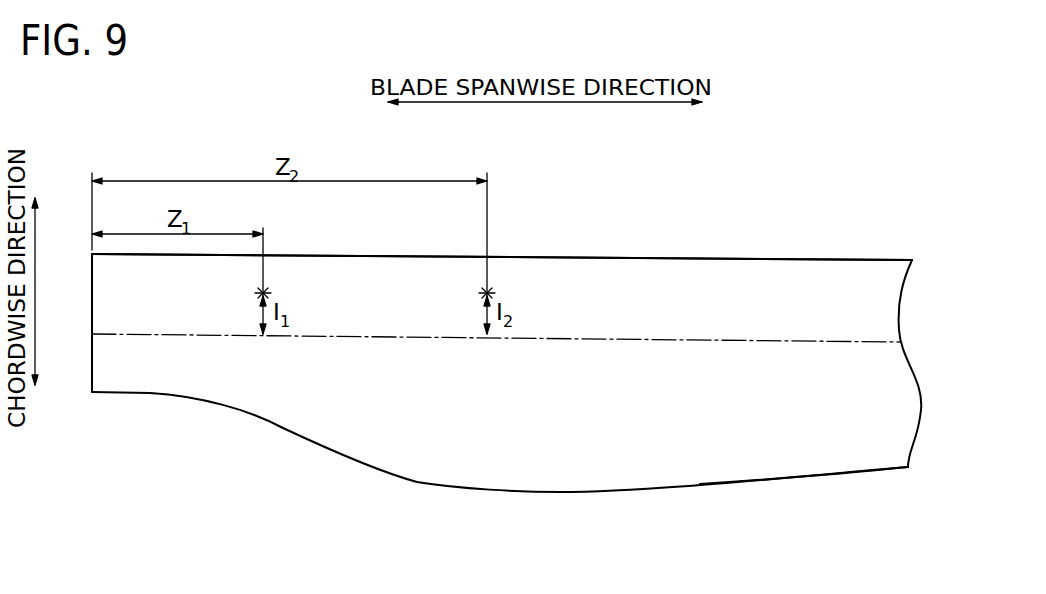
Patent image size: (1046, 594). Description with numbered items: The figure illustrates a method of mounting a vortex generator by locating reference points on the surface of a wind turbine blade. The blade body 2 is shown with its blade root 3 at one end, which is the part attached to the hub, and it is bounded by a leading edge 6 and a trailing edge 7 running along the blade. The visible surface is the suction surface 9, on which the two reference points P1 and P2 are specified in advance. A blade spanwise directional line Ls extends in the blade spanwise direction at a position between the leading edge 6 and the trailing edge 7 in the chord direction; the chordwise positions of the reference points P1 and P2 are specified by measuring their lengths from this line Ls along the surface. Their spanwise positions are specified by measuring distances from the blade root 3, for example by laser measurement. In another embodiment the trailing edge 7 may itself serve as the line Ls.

The blade body 2 is at (708, 285).
The blade root 3 is at (92, 360).
The leading edge 6 is at (612, 253).
The trailing edge 7 is at (620, 492).
The suction surface 9 is at (780, 447).
The blade spanwise directional line Ls is at (640, 337).
The reference point P1 is at (268, 291).
The reference point P2 is at (492, 291).